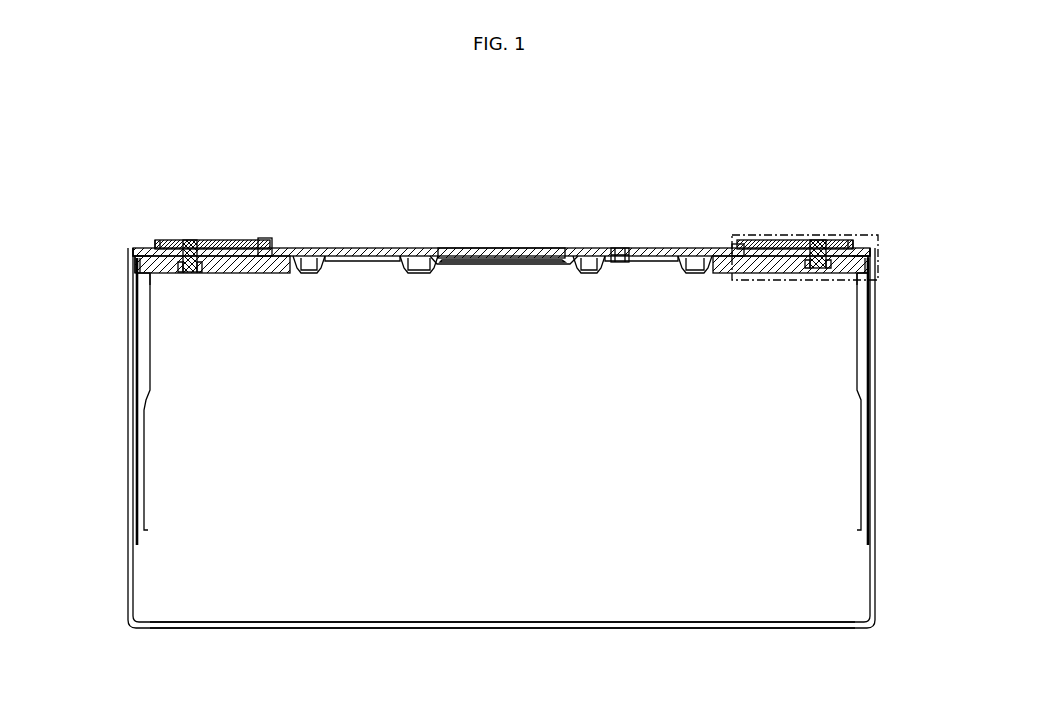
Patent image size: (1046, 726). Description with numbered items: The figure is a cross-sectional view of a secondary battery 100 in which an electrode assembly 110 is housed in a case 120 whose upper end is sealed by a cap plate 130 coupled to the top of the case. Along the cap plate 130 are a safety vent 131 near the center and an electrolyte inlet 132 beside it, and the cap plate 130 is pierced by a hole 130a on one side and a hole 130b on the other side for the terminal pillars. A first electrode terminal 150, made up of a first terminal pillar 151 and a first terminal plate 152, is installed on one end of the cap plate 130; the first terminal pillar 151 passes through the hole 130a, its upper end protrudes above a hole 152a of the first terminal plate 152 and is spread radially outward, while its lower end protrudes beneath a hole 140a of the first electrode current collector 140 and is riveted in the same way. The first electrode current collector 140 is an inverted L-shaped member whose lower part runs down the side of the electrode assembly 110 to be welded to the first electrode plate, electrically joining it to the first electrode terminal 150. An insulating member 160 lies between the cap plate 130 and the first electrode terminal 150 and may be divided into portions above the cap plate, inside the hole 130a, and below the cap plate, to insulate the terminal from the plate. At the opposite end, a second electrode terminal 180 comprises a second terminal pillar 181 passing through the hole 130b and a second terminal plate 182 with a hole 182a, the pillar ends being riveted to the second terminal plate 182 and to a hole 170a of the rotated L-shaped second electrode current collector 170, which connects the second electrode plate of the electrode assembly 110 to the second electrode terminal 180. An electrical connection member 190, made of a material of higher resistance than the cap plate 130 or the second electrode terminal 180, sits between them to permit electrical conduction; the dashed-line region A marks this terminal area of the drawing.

The secondary battery 100 is at (501, 397).
The electrode assembly 110 is at (465, 605).
The case 120 is at (603, 630).
The cap plate 130 is at (366, 248).
The hole 130a is at (153, 241).
The hole 130b is at (850, 266).
The safety vent 131 is at (501, 250).
The electrolyte inlet 132 is at (618, 250).
The first electrode current collector 140 is at (137, 400).
The hole 140a is at (187, 273).
The first electrode terminal 150 is at (208, 204).
The first terminal pillar 151 is at (174, 226).
The first terminal plate 152 is at (226, 240).
The hole 152a is at (187, 242).
The insulating member 160 is at (270, 245).
The second electrode current collector 170 is at (868, 400).
The hole 170a is at (822, 272).
The second electrode terminal 180 is at (799, 202).
The second terminal pillar 181 is at (833, 224).
The second terminal plate 182 is at (780, 240).
The hole 182a is at (855, 243).
The electrical connection member 190 is at (740, 250).
The enlarged region A is at (880, 235).